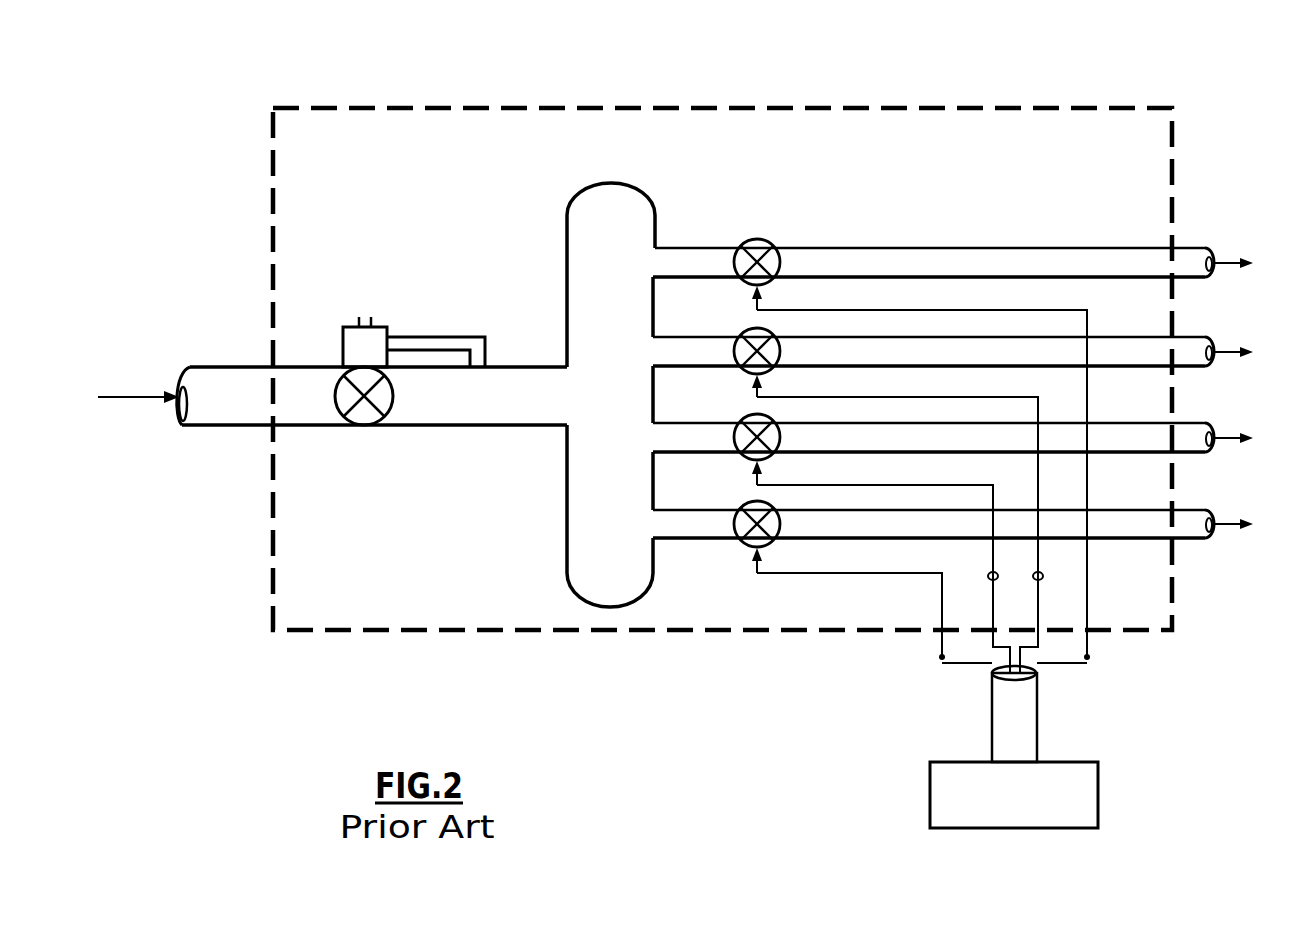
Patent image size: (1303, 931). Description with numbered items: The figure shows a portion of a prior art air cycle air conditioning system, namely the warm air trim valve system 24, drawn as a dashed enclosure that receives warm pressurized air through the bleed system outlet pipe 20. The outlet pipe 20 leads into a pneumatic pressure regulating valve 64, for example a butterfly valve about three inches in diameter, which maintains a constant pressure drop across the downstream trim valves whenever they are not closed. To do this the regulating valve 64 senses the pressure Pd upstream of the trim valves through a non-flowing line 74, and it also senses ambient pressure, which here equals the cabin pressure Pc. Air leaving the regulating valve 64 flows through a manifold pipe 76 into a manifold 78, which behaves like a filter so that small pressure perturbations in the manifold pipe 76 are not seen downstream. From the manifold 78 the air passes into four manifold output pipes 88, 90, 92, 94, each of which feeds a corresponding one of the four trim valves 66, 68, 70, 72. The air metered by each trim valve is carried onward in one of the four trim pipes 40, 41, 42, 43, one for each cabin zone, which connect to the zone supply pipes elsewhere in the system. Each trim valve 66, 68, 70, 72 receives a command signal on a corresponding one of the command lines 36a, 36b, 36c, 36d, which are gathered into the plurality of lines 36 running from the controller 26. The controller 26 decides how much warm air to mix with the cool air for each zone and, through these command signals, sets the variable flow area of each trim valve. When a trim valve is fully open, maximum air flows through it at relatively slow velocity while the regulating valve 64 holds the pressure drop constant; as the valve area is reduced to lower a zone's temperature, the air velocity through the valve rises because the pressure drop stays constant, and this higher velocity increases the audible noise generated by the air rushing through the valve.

The warm air trim valve system 24 is at (994, 104).
The bleed system outlet pipe 20 is at (208, 425).
The manifold pipe 76 is at (437, 425).
The pneumatic pressure regulating valve 64 is at (362, 426).
The non-flowing line 74 is at (409, 342).
The manifold 78 is at (592, 203).
The manifold output pipe 94 is at (696, 278).
The manifold output pipe 92 is at (696, 367).
The manifold output pipe 90 is at (696, 453).
The manifold output pipe 88 is at (696, 540).
The trim valve 72 is at (750, 286).
The trim valve 70 is at (750, 375).
The trim valve 68 is at (750, 462).
The trim valve 66 is at (750, 550).
The trim pipe 43 is at (1188, 279).
The trim pipe 42 is at (1188, 367).
The trim pipe 41 is at (1188, 453).
The trim pipe 40 is at (1188, 540).
The command line 36a is at (940, 660).
The command line 36b is at (993, 580).
The command line 36c is at (1039, 580).
The command line 36d is at (1088, 660).
The plurality of lines 36 is at (1037, 730).
The controller 26 is at (1099, 787).